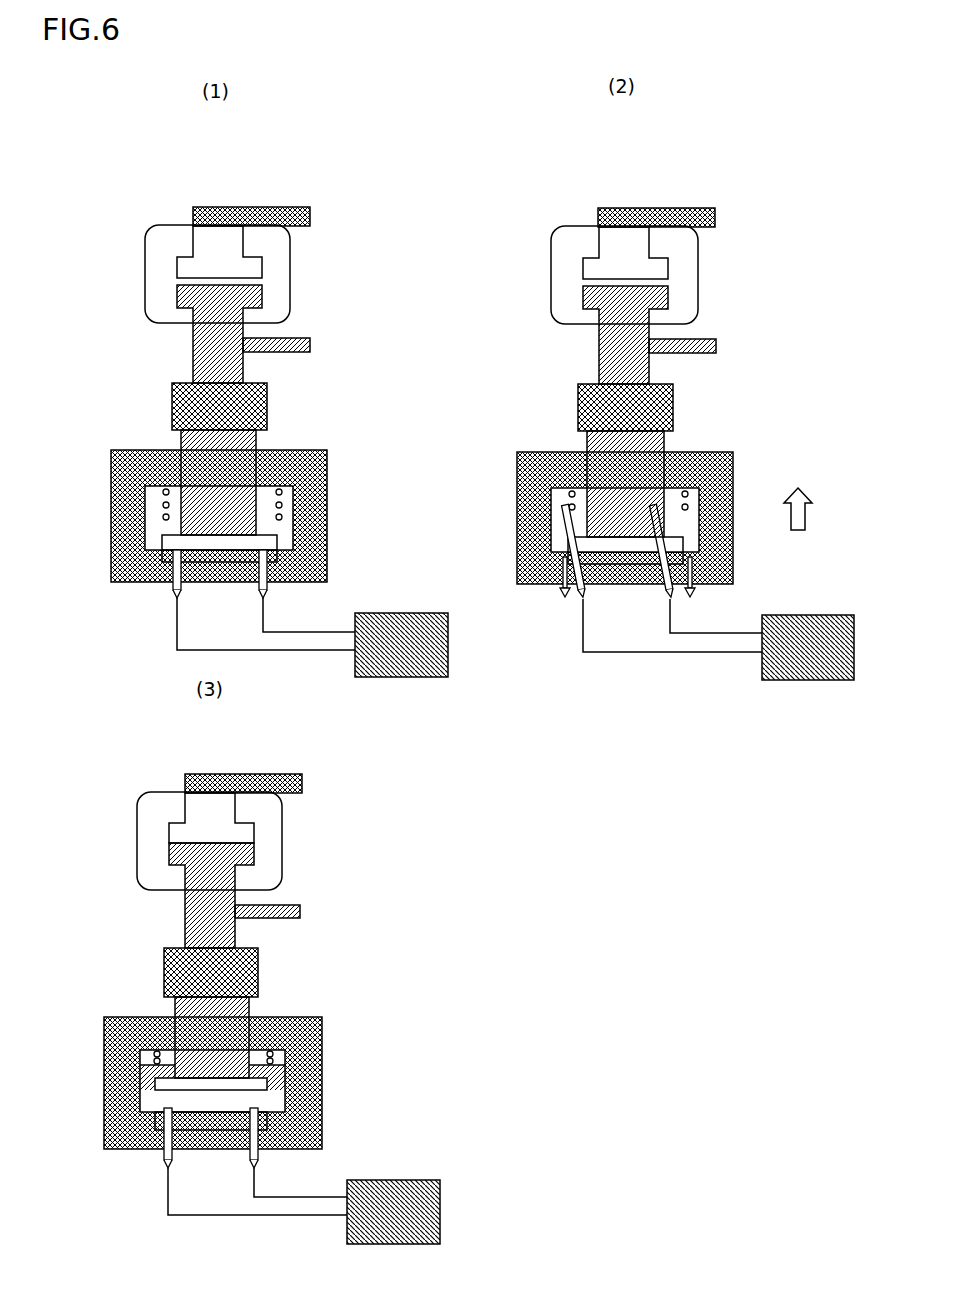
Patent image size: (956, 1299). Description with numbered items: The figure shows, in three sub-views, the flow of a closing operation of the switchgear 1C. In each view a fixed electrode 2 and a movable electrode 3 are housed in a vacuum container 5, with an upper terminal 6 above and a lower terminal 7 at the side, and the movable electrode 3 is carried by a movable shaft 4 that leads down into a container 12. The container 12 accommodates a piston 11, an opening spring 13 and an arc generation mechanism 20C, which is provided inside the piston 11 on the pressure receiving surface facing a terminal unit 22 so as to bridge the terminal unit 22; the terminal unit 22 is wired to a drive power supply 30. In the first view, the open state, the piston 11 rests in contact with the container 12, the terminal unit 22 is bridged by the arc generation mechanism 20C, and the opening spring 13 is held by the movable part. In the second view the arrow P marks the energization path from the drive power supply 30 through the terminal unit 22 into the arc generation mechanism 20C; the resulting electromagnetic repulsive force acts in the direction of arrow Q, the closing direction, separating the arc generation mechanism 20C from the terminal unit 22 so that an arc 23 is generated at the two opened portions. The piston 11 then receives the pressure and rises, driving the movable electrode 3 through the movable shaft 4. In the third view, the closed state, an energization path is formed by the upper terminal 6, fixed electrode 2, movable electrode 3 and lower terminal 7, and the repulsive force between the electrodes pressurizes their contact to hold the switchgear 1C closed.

The switchgear 1C is at (80, 113).
The fixed electrode 2 is at (197, 240).
The movable electrode 3 is at (190, 293).
The movable shaft 4 is at (267, 397).
The vacuum container 5 is at (290, 277).
The upper terminal 6 is at (277, 208).
The lower terminal 7 is at (310, 345).
The piston 11 is at (225, 455).
The container 12 is at (313, 523).
The opening spring 13 is at (287, 488).
The arc generation mechanism 20C is at (227, 537).
The terminal unit 22 is at (263, 590).
The arc 23 is at (680, 548).
The drive power supply 30 is at (377, 620).
The arrow P is at (690, 590).
The arrow Q is at (811, 509).